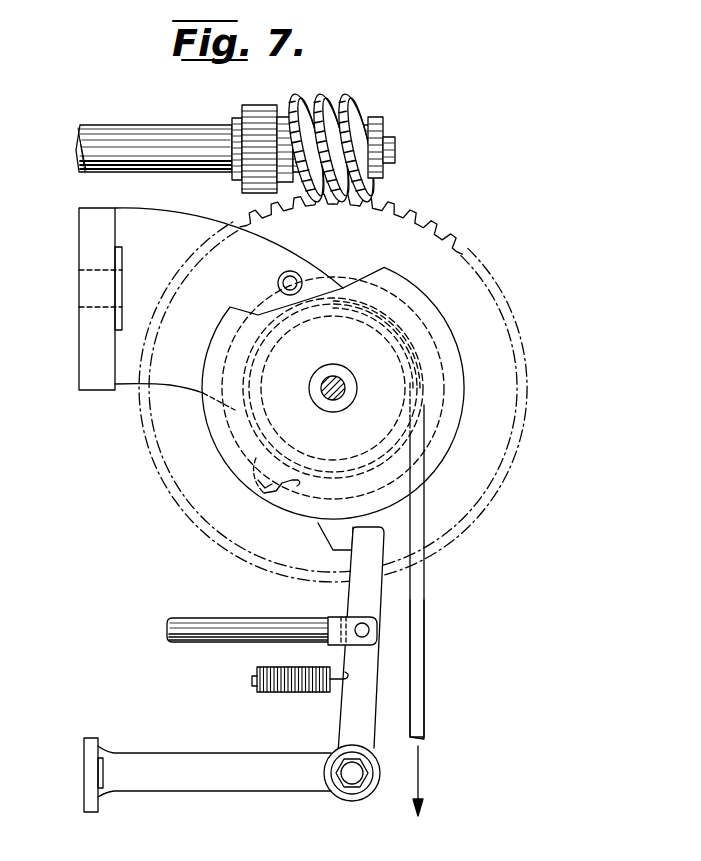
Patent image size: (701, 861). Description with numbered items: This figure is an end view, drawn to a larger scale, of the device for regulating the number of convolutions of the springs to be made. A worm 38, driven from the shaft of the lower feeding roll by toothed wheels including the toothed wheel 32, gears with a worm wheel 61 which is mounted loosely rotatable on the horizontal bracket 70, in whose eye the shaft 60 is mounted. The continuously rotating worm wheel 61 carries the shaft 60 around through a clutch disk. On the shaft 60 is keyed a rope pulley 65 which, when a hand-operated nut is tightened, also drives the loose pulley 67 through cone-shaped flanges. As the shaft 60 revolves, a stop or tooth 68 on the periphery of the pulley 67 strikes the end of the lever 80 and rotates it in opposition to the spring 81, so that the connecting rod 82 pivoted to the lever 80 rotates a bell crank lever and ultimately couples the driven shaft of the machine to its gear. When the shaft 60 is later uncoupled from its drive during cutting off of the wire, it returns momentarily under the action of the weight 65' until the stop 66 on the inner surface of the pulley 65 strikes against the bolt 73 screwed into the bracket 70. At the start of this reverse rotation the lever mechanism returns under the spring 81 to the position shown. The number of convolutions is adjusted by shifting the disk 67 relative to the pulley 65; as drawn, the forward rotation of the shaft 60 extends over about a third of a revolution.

The toothed wheel 32 is at (252, 104).
The worm 38 is at (367, 102).
The shaft 60 is at (345, 386).
The worm wheel 61 is at (405, 226).
The rope pulley 65 is at (458, 560).
The weight 65' is at (450, 708).
The stop 66 is at (257, 493).
The loose pulley 67 is at (440, 368).
The stop or tooth 68 is at (331, 540).
The horizontal bracket 70 is at (211, 309).
The bolt 73 is at (278, 284).
The lever 80 is at (360, 706).
The spring 81 is at (277, 688).
The connecting rod 82 is at (216, 622).